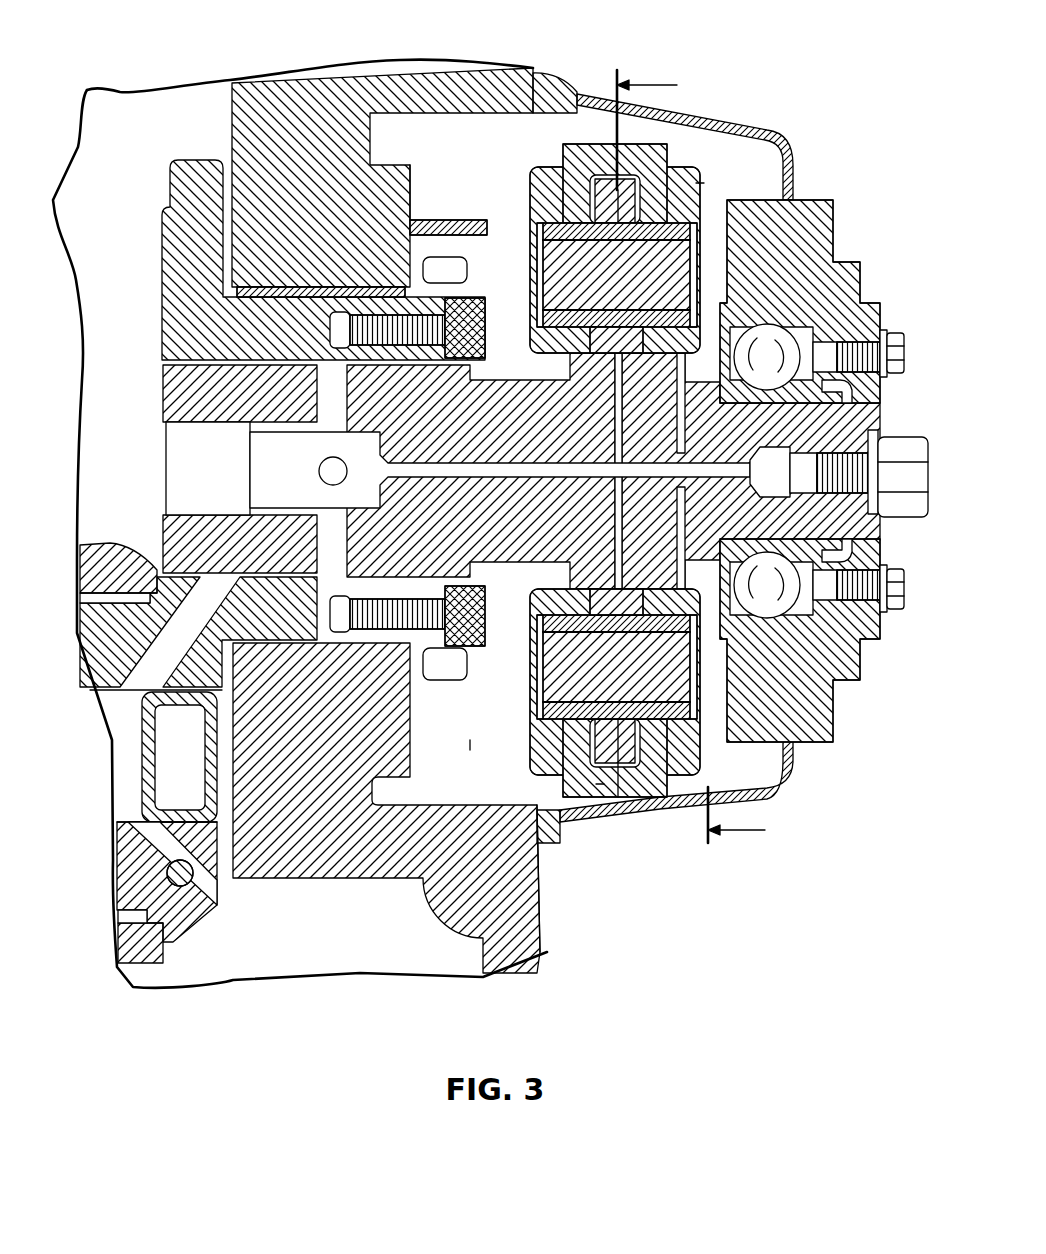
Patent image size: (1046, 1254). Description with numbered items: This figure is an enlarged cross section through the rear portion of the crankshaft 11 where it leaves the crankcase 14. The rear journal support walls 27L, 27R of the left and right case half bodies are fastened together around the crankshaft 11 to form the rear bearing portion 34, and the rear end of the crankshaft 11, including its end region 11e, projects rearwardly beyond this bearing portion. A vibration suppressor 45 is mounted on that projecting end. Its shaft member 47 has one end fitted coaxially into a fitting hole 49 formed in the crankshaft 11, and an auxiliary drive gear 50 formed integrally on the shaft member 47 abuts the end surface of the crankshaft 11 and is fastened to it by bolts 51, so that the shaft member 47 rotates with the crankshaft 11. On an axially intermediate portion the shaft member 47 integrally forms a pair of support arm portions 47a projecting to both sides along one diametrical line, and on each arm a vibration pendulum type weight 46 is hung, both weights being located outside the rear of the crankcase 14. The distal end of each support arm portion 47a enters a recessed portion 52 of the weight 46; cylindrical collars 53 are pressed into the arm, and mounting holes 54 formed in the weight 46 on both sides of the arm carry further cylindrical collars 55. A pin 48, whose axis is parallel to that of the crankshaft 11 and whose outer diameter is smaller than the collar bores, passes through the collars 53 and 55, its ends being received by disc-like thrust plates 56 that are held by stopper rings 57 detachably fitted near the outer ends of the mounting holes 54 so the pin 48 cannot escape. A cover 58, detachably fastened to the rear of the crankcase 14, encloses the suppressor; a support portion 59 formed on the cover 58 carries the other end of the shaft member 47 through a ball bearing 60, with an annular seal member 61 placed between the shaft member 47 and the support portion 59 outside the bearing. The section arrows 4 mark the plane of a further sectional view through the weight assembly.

The crankshaft 11 is at (162, 288).
The housing flange 11e is at (413, 213).
The crankcase 14 is at (541, 907).
The rear journal support wall 27R is at (243, 112).
The rear journal support wall 27L is at (300, 865).
The rear bearing portion 34 is at (409, 186).
The vibration suppressor 45 is at (528, 702).
The vibration pendulum type weight 46 is at (700, 183).
The shaft member 47 is at (870, 417).
The support arm portion 47a is at (608, 175).
The pin 48 is at (688, 767).
The fitting hole 49 is at (165, 383).
The auxiliary drive gear 50 is at (443, 676).
The bolt 51 is at (487, 313).
The recessed portion 52 is at (587, 145).
The cylindrical collar 53 is at (600, 215).
The mounting hole 54 is at (540, 228).
The cylindrical collar 55 is at (570, 353).
The thrust plate 56 is at (545, 340).
The stopper ring 57 is at (527, 227).
The cover 58 is at (758, 128).
The support portion 59 is at (823, 253).
The ball bearing 60 is at (857, 653).
The annular seal member 61 is at (858, 550).
The section line 4- 4 is at (691, 467).